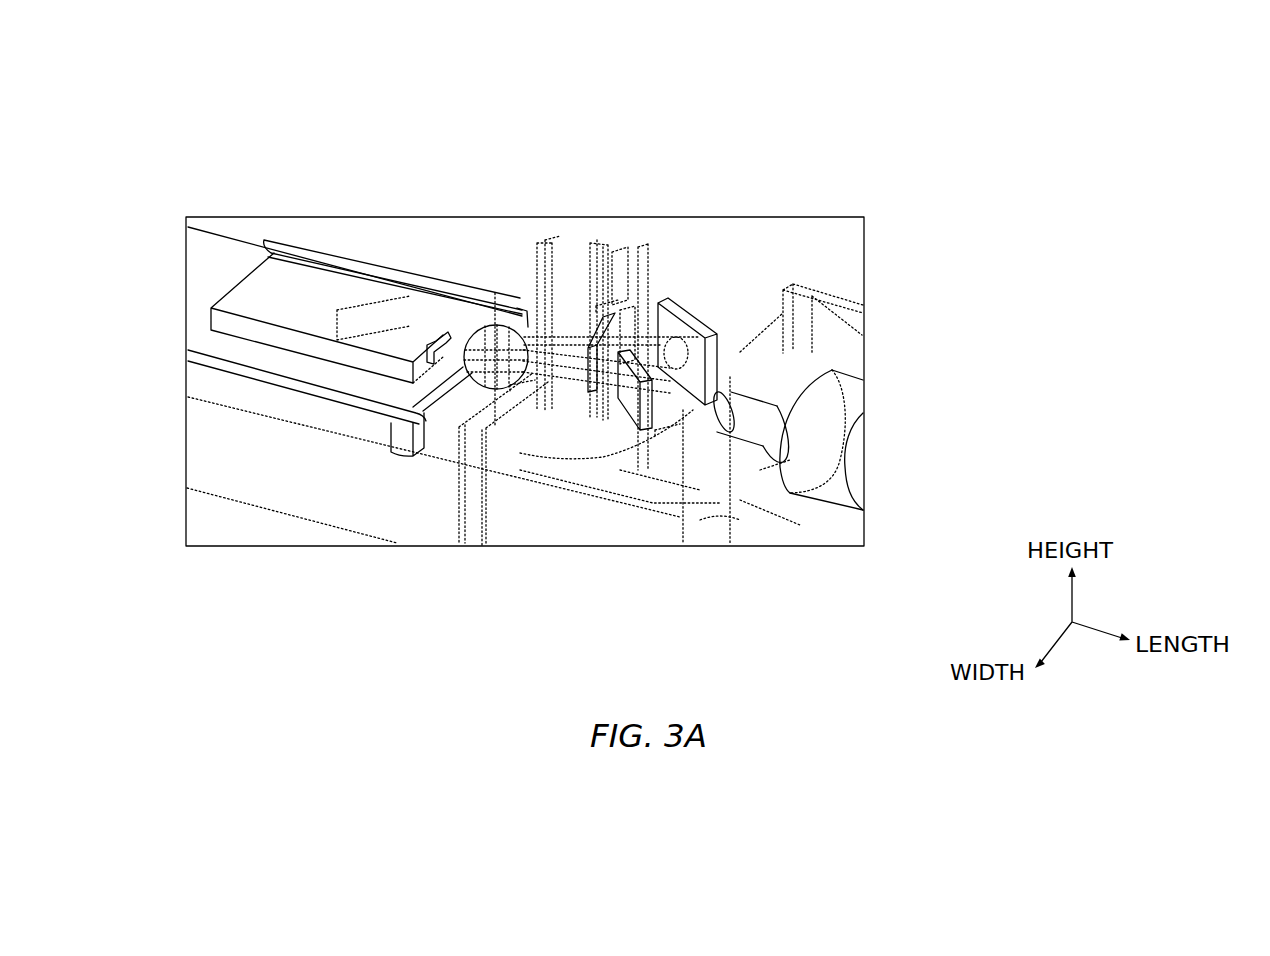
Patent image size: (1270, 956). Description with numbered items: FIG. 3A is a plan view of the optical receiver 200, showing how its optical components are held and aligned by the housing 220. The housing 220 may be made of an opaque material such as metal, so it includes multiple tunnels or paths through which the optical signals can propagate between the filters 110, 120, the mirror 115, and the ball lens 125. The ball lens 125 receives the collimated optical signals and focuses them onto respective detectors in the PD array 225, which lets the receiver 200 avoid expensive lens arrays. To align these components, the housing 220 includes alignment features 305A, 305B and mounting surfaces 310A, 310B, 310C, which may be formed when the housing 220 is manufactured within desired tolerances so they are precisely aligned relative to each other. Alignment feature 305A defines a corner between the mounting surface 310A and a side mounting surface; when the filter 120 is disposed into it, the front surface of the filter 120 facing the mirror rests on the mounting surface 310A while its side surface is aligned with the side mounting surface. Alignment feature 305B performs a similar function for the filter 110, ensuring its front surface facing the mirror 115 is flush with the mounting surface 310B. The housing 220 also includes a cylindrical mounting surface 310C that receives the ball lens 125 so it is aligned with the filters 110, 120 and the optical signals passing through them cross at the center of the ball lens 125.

The optical receiver 200 is at (919, 34).
The housing 220 is at (850, 333).
The photodiode (PD) array 225 is at (456, 321).
The ball lens 125 is at (491, 318).
The optical filter 120 is at (591, 348).
The optical filter 110 is at (628, 413).
The mirror 115 is at (690, 321).
The alignment feature 305A is at (631, 291).
The alignment feature 305B is at (638, 323).
The mounting surface 310A is at (605, 301).
The mounting surface 310B is at (665, 430).
The cylindrical mounting surface 310C is at (523, 389).